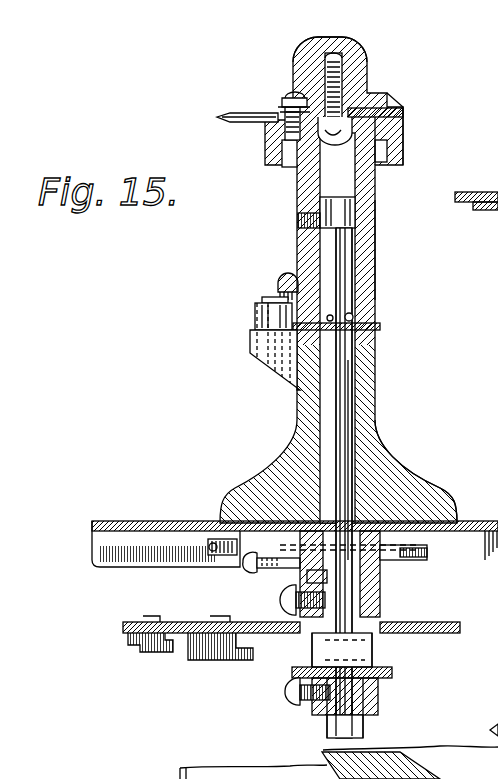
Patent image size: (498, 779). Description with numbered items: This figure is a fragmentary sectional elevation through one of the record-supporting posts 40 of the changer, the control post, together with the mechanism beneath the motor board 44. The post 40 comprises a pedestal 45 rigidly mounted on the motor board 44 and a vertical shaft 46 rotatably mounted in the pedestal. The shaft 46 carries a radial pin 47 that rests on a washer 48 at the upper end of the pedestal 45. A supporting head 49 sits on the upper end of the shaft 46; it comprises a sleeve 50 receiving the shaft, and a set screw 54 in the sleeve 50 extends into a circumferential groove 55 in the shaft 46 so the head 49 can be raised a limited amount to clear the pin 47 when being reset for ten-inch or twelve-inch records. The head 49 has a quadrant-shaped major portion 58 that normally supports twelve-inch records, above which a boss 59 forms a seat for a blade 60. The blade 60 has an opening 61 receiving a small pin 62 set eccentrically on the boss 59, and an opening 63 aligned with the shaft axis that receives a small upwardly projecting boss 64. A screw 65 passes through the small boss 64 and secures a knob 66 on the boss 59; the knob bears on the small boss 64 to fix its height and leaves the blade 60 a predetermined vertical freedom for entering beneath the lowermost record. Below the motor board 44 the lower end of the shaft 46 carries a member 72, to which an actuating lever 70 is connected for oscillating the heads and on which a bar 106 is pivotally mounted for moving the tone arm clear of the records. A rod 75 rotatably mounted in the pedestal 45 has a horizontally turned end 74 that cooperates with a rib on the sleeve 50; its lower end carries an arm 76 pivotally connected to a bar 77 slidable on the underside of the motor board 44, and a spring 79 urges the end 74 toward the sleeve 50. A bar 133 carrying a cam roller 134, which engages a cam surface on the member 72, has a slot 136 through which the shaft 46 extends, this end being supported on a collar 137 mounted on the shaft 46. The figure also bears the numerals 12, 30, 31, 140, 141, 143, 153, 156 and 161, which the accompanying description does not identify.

The frame 12 is at (483, 413).
The feed direction arrow 30 is at (437, 177).
The return direction arrow 31 is at (490, 337).
The post 40 is at (240, 490).
The motor board 44 is at (488, 190).
The pedestal 45 is at (378, 457).
The vertical shaft 46 is at (343, 365).
The radial pin 47 is at (353, 316).
The washer 48 is at (380, 326).
The supporting head 49 is at (373, 195).
The sleeve 50 is at (373, 248).
The set screw 54 is at (298, 218).
The circumferential groove 55 is at (318, 197).
The quadrant portion 58 is at (400, 128).
The boss 59 is at (382, 113).
The blade 60 is at (234, 114).
The opening 61 is at (297, 103).
The small pin 62 is at (282, 107).
The opening 63 is at (403, 142).
The small boss 64 is at (343, 135).
The screw 65 is at (337, 72).
The knob 66 is at (352, 45).
The actuating lever 70 is at (190, 650).
The member 72 is at (418, 617).
The horizontally turned end 74 is at (280, 276).
The rod 75 is at (277, 393).
The arm 76 is at (245, 565).
The bar 77 is at (423, 553).
The spring 79 is at (208, 547).
The bar 106 is at (128, 642).
The bar 133 is at (393, 672).
The cam roller 134 is at (373, 648).
The slot 136 is at (360, 690).
The collar 137 is at (377, 708).
The guide 140 is at (483, 284).
The guide 141 is at (483, 306).
The support 143 is at (483, 391).
The carriage 153 is at (482, 248).
The link 156 is at (475, 202).
The roller 161 is at (481, 251).